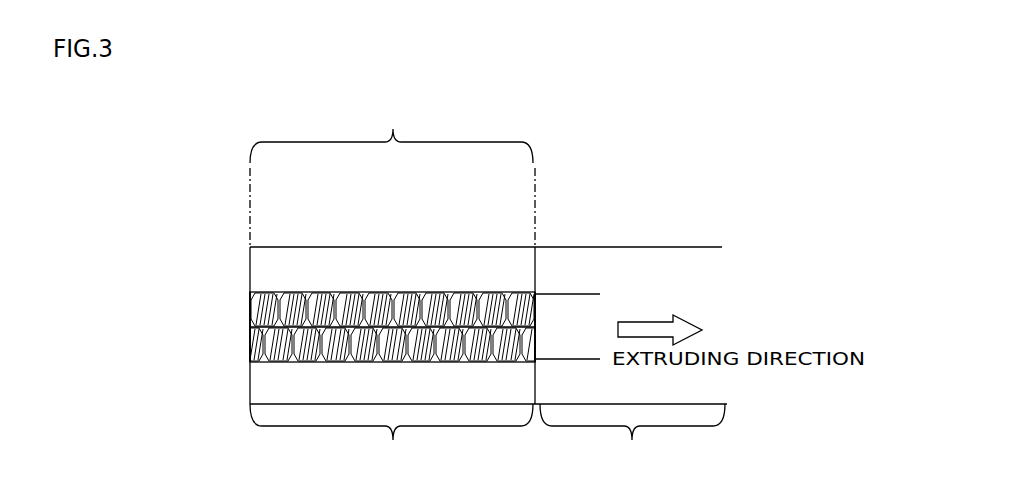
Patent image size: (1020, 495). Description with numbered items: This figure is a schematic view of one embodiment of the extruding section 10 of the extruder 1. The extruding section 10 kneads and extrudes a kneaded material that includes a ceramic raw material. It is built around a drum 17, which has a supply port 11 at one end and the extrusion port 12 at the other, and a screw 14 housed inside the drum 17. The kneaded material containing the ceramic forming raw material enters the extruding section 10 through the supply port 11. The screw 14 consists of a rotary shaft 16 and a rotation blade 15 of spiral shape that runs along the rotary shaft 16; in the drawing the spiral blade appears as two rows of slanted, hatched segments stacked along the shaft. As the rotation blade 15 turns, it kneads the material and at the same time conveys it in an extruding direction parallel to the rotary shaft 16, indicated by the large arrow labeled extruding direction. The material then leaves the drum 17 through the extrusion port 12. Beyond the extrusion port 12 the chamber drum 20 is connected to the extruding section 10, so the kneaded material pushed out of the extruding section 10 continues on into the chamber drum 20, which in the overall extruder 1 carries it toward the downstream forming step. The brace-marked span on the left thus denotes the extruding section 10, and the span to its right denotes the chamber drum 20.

The extruder 1 is at (549, 101).
The extruding section 10 is at (391, 437).
The supply port 11 is at (250, 330).
The extrusion port 12 is at (533, 330).
The screw 14 is at (345, 293).
The rotation blade 15 is at (337, 292).
The rotary shaft 16 is at (320, 292).
The drum 17 is at (391, 130).
The chamber drum 20 is at (632, 436).